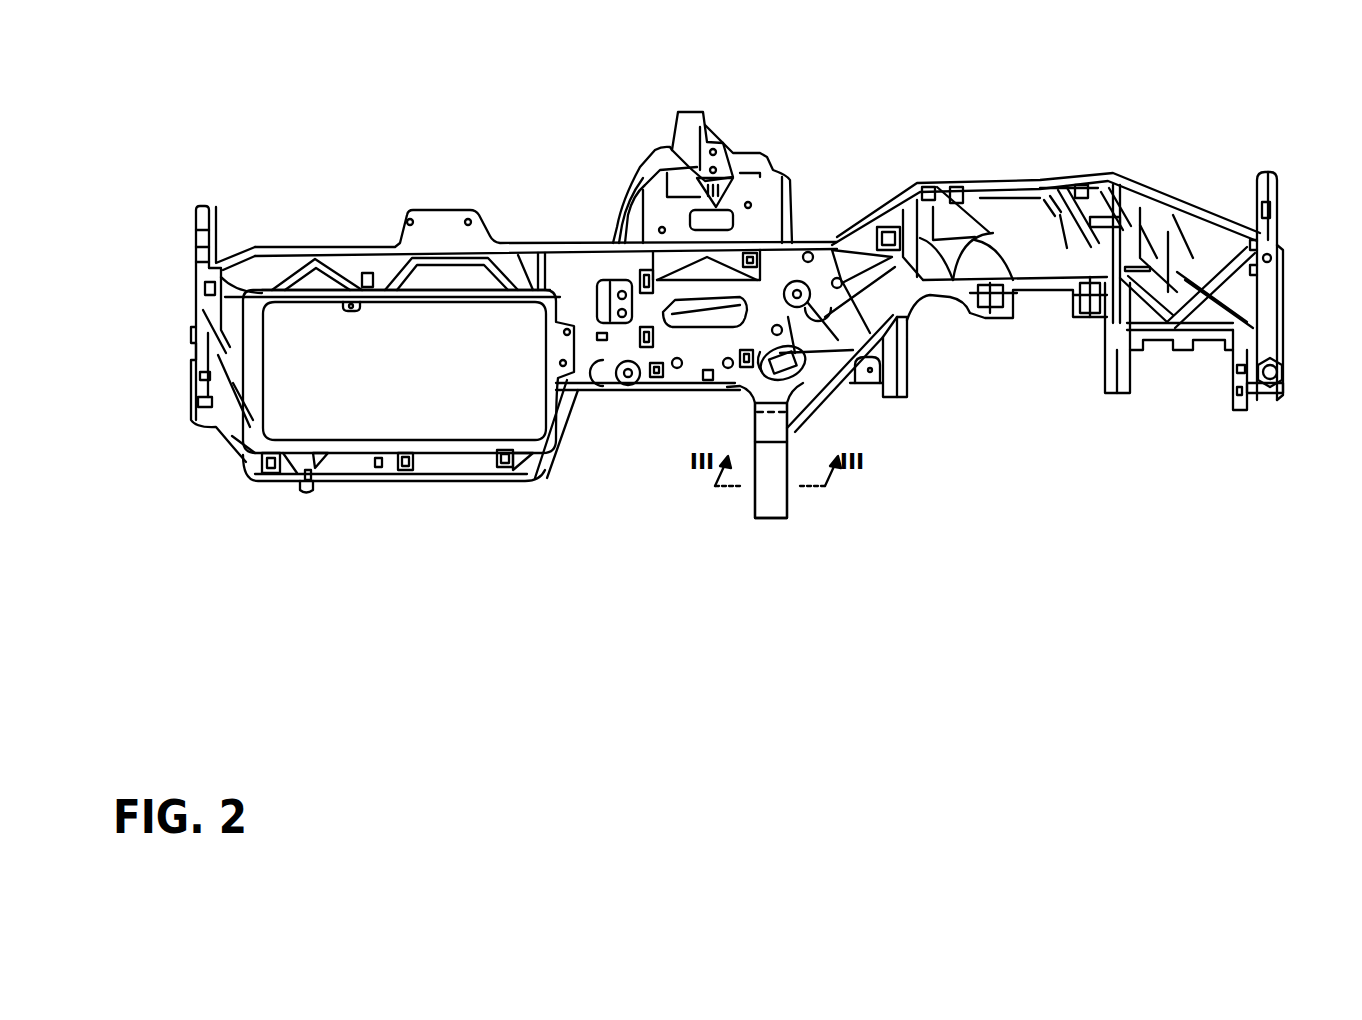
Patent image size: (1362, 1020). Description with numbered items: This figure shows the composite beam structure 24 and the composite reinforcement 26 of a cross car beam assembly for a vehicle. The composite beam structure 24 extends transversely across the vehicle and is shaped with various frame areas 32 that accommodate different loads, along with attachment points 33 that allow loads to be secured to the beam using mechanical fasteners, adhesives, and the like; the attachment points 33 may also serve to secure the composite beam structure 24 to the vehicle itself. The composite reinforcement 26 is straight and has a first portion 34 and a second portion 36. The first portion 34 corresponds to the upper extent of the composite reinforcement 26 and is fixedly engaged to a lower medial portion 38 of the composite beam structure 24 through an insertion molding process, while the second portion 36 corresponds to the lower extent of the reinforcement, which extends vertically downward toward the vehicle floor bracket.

The composite beam structure 24 is at (1053, 136).
The composite reinforcement 26 is at (750, 497).
The frame areas 32 is at (235, 457).
The attachment points 33 is at (468, 220).
The first portion 34 is at (713, 150).
The second portion 36 is at (770, 502).
The lower medial portion 38 is at (779, 398).